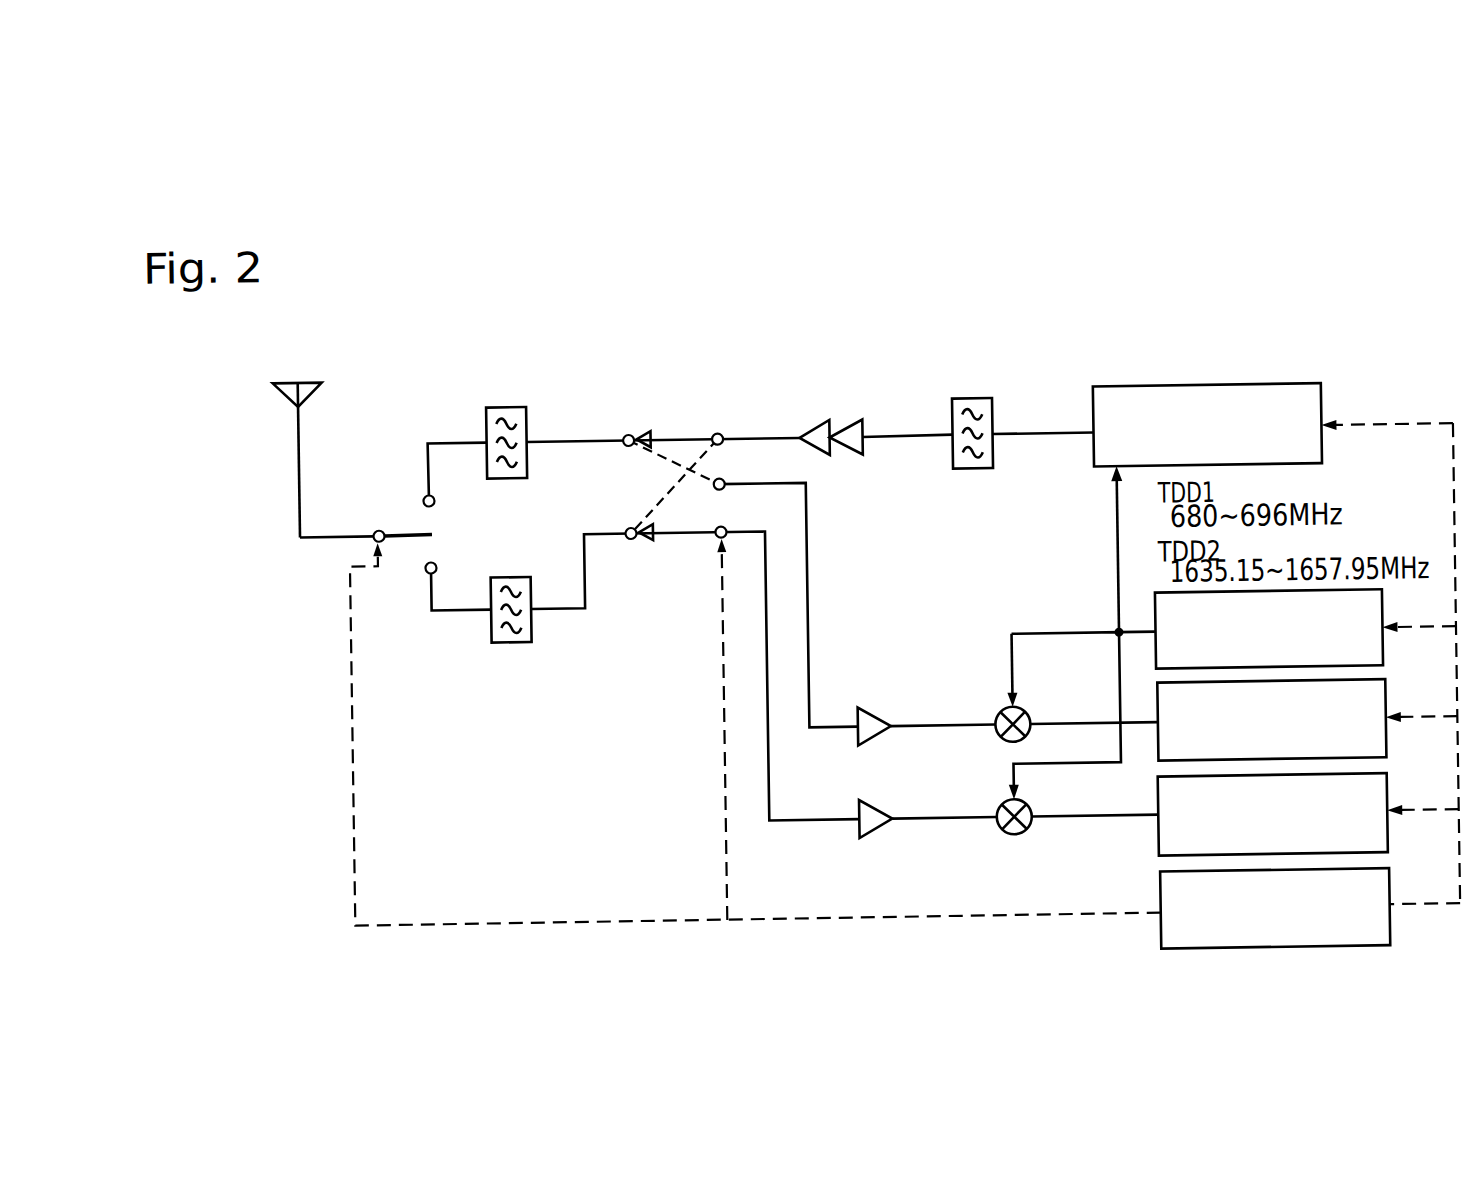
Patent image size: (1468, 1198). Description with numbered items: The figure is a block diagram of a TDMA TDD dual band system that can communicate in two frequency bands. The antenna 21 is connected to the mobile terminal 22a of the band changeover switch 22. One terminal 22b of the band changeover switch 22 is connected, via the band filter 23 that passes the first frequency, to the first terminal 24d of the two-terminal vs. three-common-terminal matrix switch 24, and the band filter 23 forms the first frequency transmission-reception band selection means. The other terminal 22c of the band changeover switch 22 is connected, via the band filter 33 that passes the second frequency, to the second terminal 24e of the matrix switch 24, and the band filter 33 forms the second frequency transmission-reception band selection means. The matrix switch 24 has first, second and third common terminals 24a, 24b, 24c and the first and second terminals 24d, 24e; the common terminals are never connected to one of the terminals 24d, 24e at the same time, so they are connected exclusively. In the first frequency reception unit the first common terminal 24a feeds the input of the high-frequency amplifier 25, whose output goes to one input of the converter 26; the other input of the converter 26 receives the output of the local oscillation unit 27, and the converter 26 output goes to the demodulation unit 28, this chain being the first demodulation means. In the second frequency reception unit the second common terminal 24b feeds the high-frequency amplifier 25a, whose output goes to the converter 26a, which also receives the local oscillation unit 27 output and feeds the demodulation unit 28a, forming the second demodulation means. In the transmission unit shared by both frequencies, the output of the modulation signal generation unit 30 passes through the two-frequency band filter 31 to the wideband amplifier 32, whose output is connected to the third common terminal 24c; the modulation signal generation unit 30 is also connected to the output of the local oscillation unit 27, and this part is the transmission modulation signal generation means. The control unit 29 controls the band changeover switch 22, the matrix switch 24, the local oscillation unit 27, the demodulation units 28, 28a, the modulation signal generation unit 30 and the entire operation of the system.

The antenna 21 is at (283, 376).
The band changeover switch 22 is at (340, 580).
The mobile terminal 22a is at (345, 580).
The terminal 22b is at (435, 562).
The terminal 22c is at (435, 499).
The band filter 23 is at (511, 639).
The two-terminal vs. three-common-terminal matrix switch 24 is at (686, 514).
The first common terminal 24a is at (728, 520).
The second common terminal 24b is at (729, 474).
The third common terminal 24c is at (720, 433).
The first terminal 24d is at (628, 527).
The second terminal 24e is at (627, 434).
The high-frequency amplifier 25 is at (853, 837).
The high-frequency amplifier 25a is at (855, 712).
The converter 26 is at (1017, 835).
The converter 26a is at (991, 739).
The local oscillation unit 27 is at (1385, 620).
The demodulation unit 28 is at (1385, 788).
The demodulation unit 28a is at (1385, 697).
The control unit 29 is at (1386, 880).
The modulation signal generation unit 30 is at (1286, 391).
The two-frequency band filter 31 is at (976, 401).
The wideband amplifier 32 is at (811, 422).
The band filter 33 is at (495, 403).